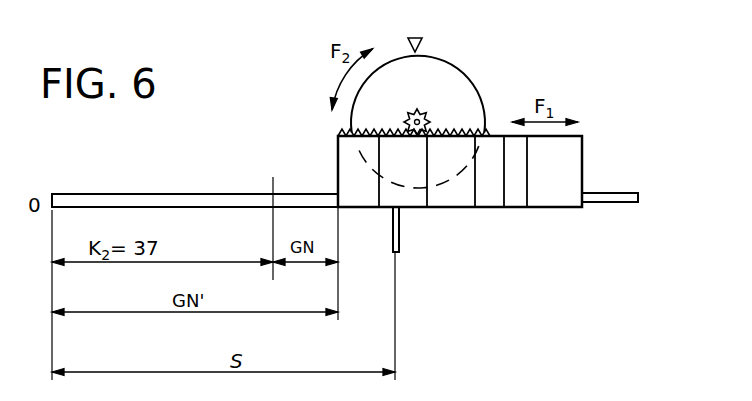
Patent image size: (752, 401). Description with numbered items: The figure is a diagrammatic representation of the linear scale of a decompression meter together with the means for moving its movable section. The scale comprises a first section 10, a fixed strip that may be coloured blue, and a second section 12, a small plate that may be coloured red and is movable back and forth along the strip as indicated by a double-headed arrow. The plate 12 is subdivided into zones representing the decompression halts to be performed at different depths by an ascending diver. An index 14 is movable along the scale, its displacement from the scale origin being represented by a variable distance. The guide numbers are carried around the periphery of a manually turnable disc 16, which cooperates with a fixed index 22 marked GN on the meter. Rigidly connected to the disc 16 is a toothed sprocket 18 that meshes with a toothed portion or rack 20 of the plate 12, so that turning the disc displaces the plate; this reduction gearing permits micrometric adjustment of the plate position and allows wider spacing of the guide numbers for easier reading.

The first section 10 is at (167, 203).
The second section 12 is at (572, 148).
The index 14 is at (401, 232).
The manually turnable disc 16 is at (478, 90).
The toothed sprocket 18 is at (428, 112).
The rack 20 is at (487, 131).
The fixed index 22 is at (423, 41).